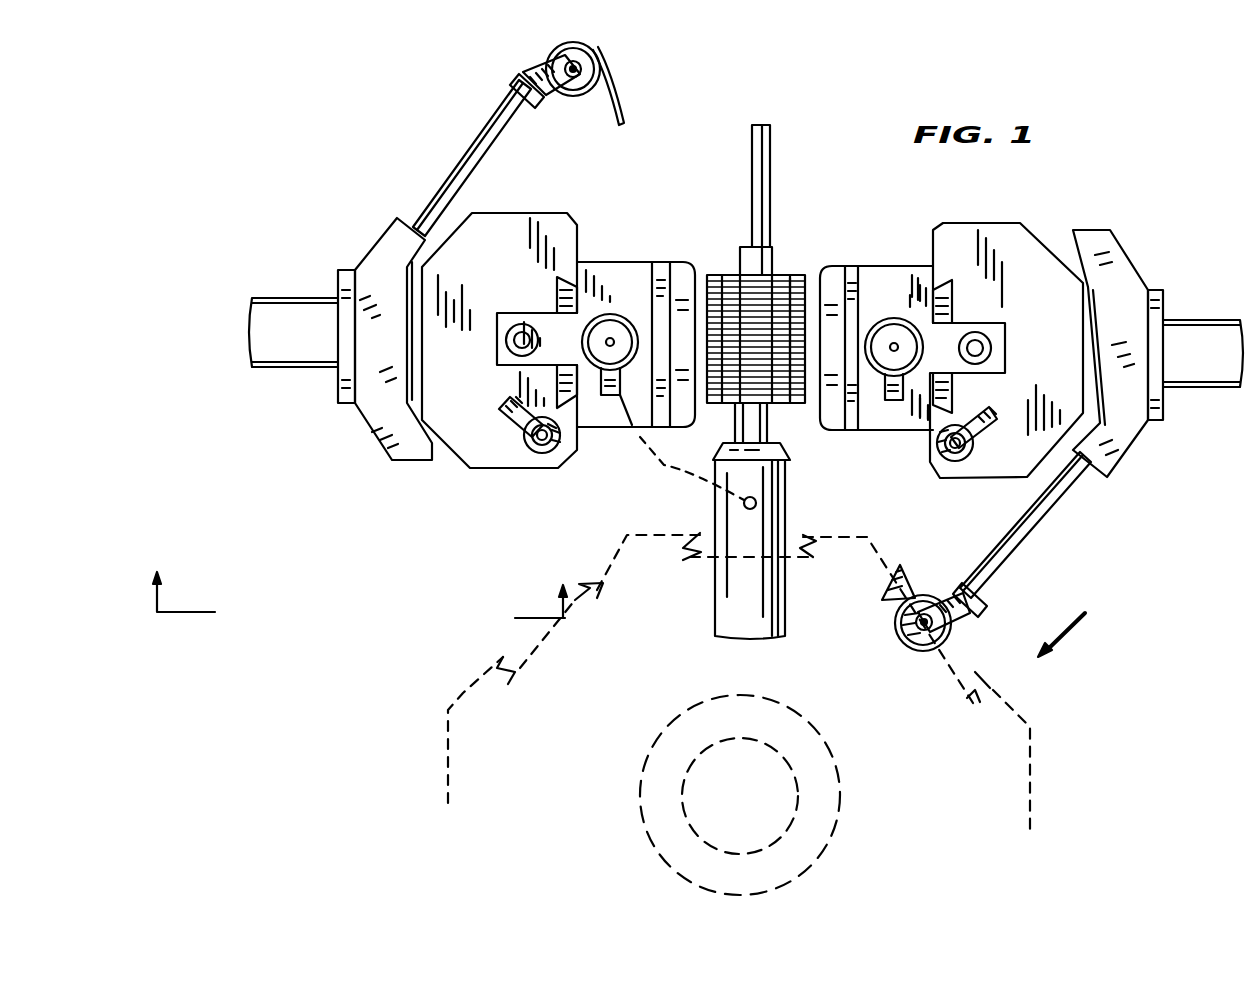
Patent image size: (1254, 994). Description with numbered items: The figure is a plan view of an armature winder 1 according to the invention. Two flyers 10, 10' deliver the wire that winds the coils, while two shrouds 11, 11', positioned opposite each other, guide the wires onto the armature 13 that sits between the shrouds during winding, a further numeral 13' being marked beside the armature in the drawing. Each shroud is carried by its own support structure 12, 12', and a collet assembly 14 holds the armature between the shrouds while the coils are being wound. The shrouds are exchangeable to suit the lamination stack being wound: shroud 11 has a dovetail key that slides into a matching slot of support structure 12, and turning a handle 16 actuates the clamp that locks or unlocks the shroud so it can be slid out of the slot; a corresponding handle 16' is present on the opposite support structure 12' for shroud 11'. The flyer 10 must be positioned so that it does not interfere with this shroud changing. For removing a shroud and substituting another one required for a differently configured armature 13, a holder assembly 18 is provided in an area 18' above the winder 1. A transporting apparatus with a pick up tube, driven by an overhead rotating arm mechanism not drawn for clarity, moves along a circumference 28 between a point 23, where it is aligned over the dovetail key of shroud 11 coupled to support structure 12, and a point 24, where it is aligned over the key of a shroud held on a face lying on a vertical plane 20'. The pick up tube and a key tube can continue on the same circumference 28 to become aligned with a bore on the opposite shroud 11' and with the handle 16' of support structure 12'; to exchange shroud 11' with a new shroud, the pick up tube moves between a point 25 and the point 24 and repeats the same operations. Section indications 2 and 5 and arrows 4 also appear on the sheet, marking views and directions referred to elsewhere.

The winder 1 is at (360, 472).
The section line II 2 is at (729, 214).
The clamping unit 4 is at (624, 208).
The section line V 5 is at (198, 612).
The flyer 10 is at (518, 139).
The flyer 10' is at (986, 551).
The shroud 11 is at (636, 321).
The shroud 11' is at (876, 323).
The support structure 12 is at (499, 320).
The support structure 12' is at (997, 327).
The armature 13 is at (757, 264).
The threaded spindle 13' is at (811, 308).
The collet assembly 14 is at (786, 474).
The handle 16 is at (529, 451).
The handle 16' is at (978, 456).
The holder assembly 18 is at (1077, 626).
The area 18' is at (718, 787).
The vertical plane 20' is at (739, 664).
The point 23 is at (610, 340).
The point 24 is at (756, 503).
The point 25 is at (893, 346).
The circumference 28 is at (660, 473).